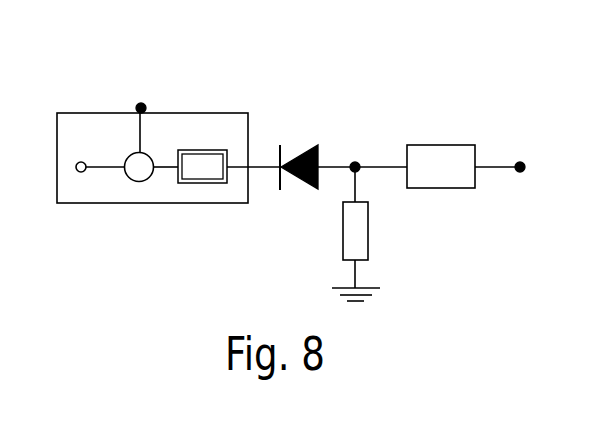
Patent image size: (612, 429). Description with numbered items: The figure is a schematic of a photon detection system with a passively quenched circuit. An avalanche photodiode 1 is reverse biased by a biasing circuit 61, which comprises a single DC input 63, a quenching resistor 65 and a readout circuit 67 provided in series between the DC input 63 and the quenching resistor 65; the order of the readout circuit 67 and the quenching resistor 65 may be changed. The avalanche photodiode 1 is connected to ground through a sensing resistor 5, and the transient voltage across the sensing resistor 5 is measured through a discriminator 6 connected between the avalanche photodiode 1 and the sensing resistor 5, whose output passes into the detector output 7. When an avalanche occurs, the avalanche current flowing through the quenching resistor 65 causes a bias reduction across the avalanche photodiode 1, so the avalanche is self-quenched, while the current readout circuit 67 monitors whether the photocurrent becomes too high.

The avalanche photodiode 1 is at (297, 153).
The sensing resistor 5 is at (368, 233).
The discriminator 6 is at (438, 145).
The detector output 7 is at (521, 161).
The biasing circuit 61 is at (182, 113).
The DC input 63 is at (79, 174).
The quenching resistor 65 is at (202, 183).
The readout circuit 67 is at (135, 151).